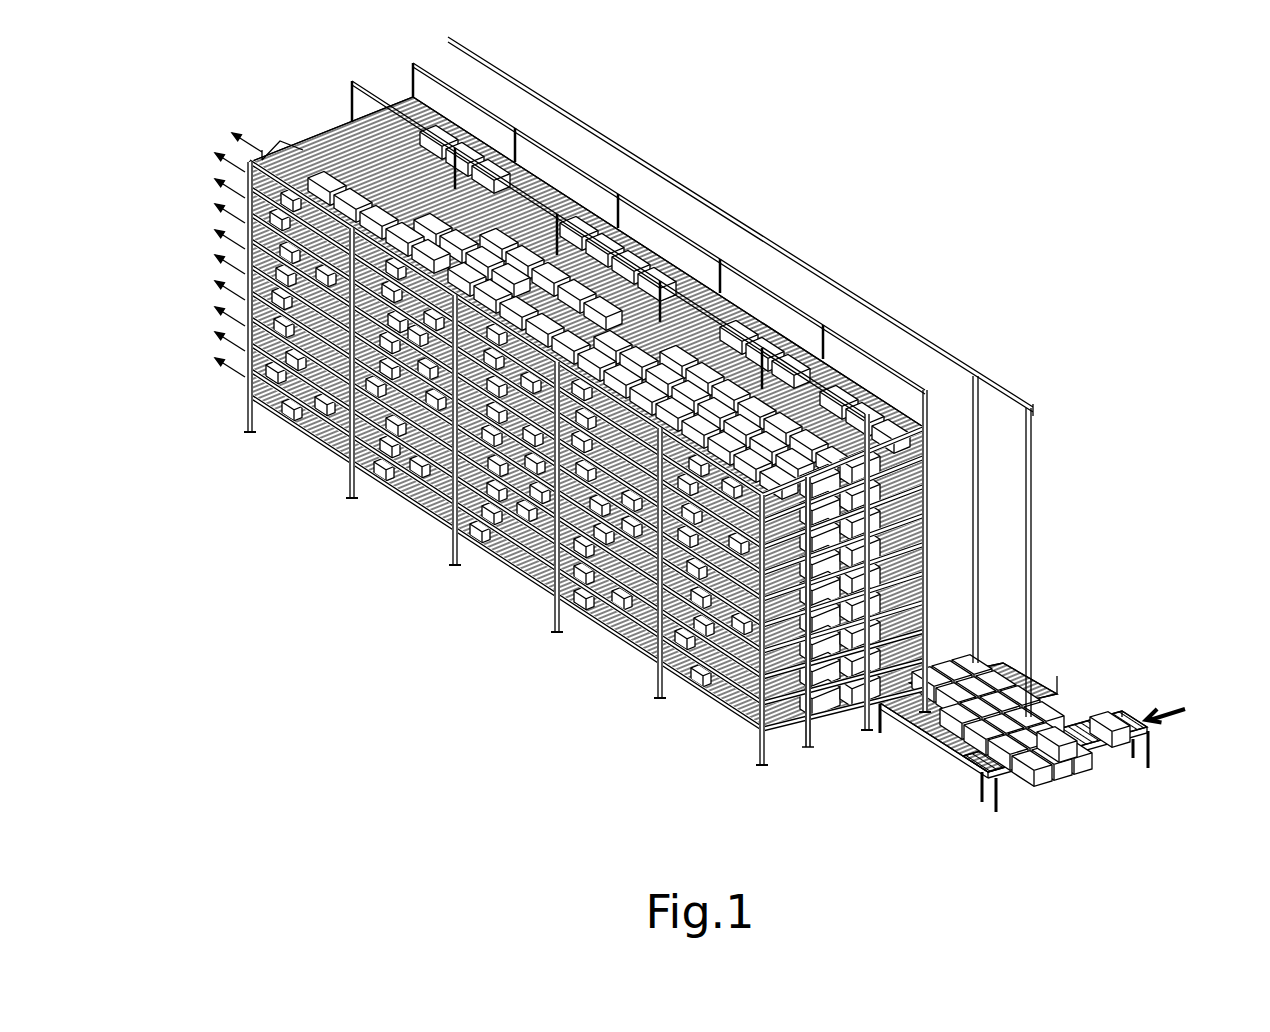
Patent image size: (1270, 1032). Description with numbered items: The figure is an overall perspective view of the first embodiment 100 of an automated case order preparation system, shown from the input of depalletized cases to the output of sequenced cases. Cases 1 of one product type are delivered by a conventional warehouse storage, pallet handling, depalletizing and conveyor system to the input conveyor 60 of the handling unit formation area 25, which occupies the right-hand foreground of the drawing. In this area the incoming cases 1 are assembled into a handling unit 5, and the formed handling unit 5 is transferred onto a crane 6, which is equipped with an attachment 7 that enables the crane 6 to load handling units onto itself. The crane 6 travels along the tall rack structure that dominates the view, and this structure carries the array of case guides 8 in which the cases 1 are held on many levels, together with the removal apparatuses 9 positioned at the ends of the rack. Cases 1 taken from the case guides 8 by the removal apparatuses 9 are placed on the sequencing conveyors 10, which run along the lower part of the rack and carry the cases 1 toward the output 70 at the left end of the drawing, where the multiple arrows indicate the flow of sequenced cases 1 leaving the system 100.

The case 1 is at (563, 190).
The handling unit 5 is at (955, 647).
The crane 6 is at (1011, 468).
The attachment 7 is at (1052, 664).
The case guides 8 is at (457, 120).
The removal apparatuses 9 is at (290, 150).
The sequencing conveyors 10 is at (695, 444).
The handling unit formation area 25 is at (1103, 685).
The input conveyor 60 is at (1202, 684).
The output 70 is at (196, 259).
The first embodiment of the system 100 is at (700, 423).